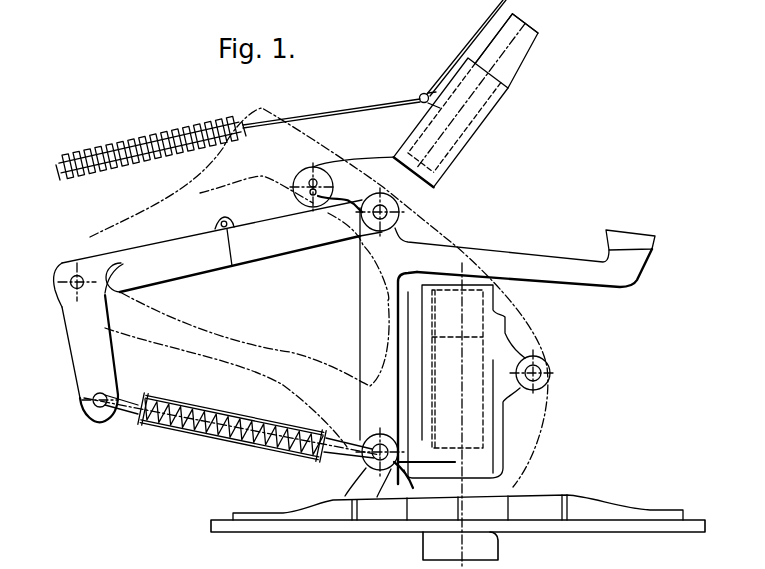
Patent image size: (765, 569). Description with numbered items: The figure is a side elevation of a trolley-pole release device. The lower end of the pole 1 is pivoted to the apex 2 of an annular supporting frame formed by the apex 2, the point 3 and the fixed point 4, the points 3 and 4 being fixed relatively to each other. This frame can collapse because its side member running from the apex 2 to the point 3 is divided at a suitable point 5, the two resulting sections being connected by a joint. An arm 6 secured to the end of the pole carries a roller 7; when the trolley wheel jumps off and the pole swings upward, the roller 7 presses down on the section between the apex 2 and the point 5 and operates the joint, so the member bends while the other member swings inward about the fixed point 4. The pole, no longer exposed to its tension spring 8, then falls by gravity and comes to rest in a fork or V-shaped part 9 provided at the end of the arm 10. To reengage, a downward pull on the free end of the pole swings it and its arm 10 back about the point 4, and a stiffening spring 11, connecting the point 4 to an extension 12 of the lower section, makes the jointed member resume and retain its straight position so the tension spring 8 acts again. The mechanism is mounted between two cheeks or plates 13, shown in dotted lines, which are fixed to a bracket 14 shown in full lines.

The pole 1 is at (518, 65).
The apex of supporting frame 2 is at (396, 220).
The frame point 3 is at (72, 277).
The fixed point of frame 4 is at (363, 462).
The dividing point 5 is at (233, 220).
The arm 6 is at (347, 167).
The roller 7 is at (297, 172).
The tension spring 8 is at (127, 147).
The fork or V-shaped part 9 is at (625, 230).
The arm 10 is at (580, 287).
The spring 11 is at (200, 430).
The extension 12 is at (113, 366).
The cheeks or plates 13 is at (257, 335).
The bracket 14 is at (550, 367).